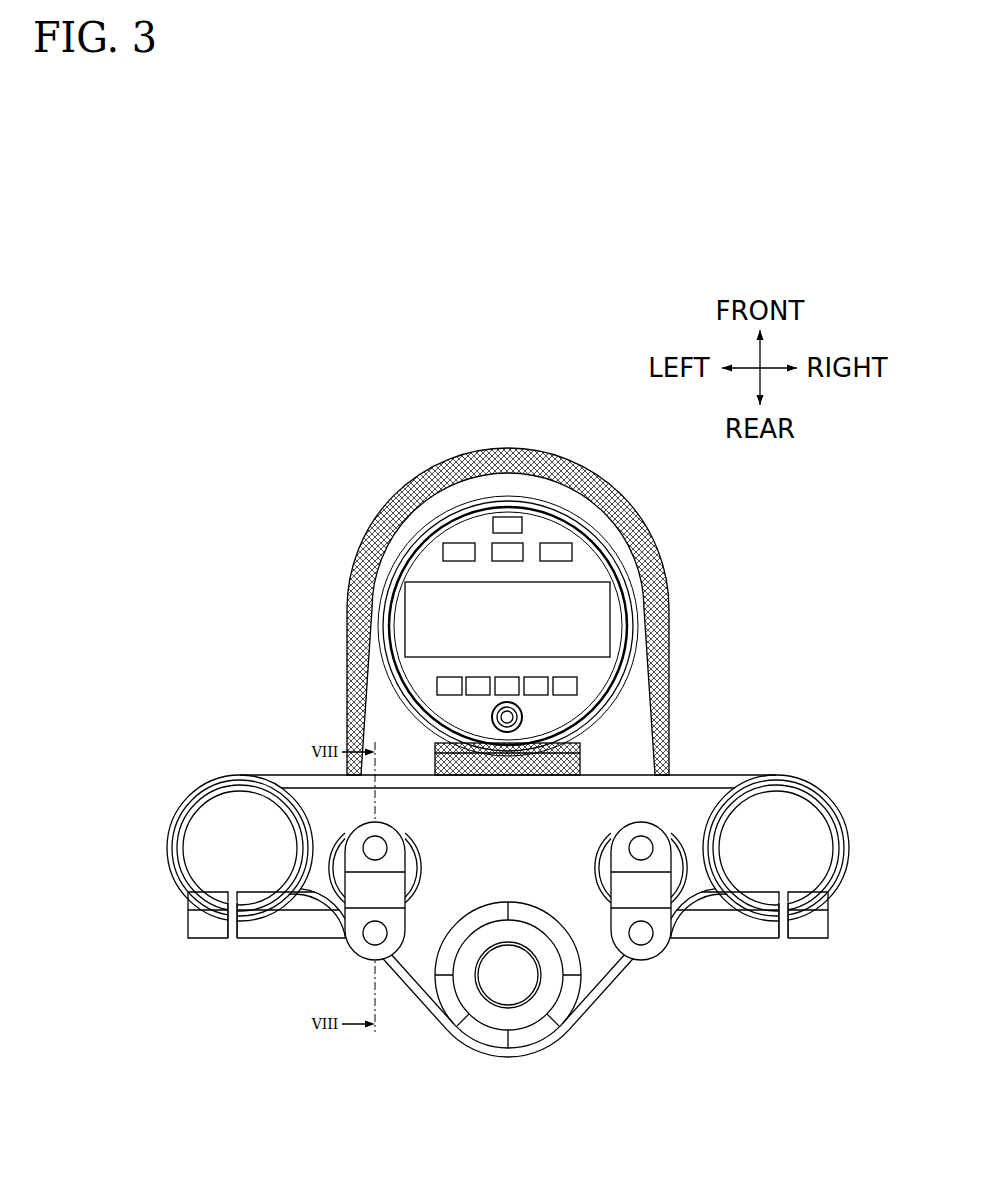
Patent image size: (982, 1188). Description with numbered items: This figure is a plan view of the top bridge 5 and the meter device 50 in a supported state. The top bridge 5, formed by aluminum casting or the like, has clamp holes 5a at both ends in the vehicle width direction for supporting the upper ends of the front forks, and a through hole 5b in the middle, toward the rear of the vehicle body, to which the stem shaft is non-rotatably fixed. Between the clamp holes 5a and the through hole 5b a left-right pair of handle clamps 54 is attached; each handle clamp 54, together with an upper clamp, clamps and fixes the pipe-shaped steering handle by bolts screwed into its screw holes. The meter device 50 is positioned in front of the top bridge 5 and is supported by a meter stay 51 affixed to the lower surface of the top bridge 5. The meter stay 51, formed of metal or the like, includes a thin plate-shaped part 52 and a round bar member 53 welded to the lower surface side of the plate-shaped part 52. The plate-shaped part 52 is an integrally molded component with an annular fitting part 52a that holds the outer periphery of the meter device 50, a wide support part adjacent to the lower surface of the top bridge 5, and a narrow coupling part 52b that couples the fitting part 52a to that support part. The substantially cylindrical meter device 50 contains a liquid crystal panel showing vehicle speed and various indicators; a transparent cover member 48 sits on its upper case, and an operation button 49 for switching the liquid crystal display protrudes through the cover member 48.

The top bridge 5 is at (597, 946).
The clamp holes 5a is at (236, 820).
The through hole 5b is at (499, 985).
The cover member 48 is at (435, 613).
The operation button 49 is at (506, 732).
The meter device 50 is at (461, 485).
The meter stay 51 is at (562, 444).
The plate-shaped part 52 is at (637, 697).
The fitting part 52a is at (669, 598).
The coupling part 52b is at (590, 758).
The round bar member 53 is at (670, 680).
The handle clamps 54 is at (355, 942).